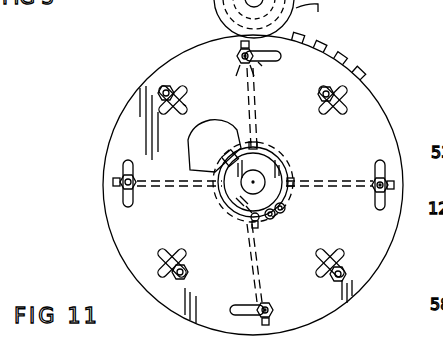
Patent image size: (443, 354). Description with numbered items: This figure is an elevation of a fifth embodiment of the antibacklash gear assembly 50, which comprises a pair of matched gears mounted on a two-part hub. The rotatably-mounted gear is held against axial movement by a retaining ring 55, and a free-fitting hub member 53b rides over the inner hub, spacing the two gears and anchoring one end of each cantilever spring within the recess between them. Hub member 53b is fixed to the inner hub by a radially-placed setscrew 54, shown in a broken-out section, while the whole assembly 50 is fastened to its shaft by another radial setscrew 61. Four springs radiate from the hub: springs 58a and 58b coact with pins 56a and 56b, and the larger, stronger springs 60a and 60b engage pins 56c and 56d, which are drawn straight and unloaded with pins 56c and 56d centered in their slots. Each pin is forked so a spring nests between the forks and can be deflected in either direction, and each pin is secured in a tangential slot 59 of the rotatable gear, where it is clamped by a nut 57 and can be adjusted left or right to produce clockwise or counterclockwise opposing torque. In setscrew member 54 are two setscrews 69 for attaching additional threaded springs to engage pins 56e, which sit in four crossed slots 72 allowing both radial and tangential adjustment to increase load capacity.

The antibacklash gear assembly 50 is at (381, 97).
The hub member 53b is at (224, 158).
The setscrew 54 is at (222, 142).
The retaining ring 55 is at (284, 211).
The pin 56a is at (244, 66).
The pin 56b is at (274, 310).
The pin 56c is at (120, 184).
The pin 56d is at (376, 178).
The pin 56e is at (162, 88).
The nut 57 is at (262, 66).
The spring 58a is at (258, 98).
The spring 58b is at (259, 282).
The slot 59 is at (236, 57).
The spring 60a is at (197, 187).
The spring 60b is at (318, 189).
The setscrew 61 is at (258, 223).
The setscrews 69 is at (284, 160).
The crossed slots 72 is at (186, 106).